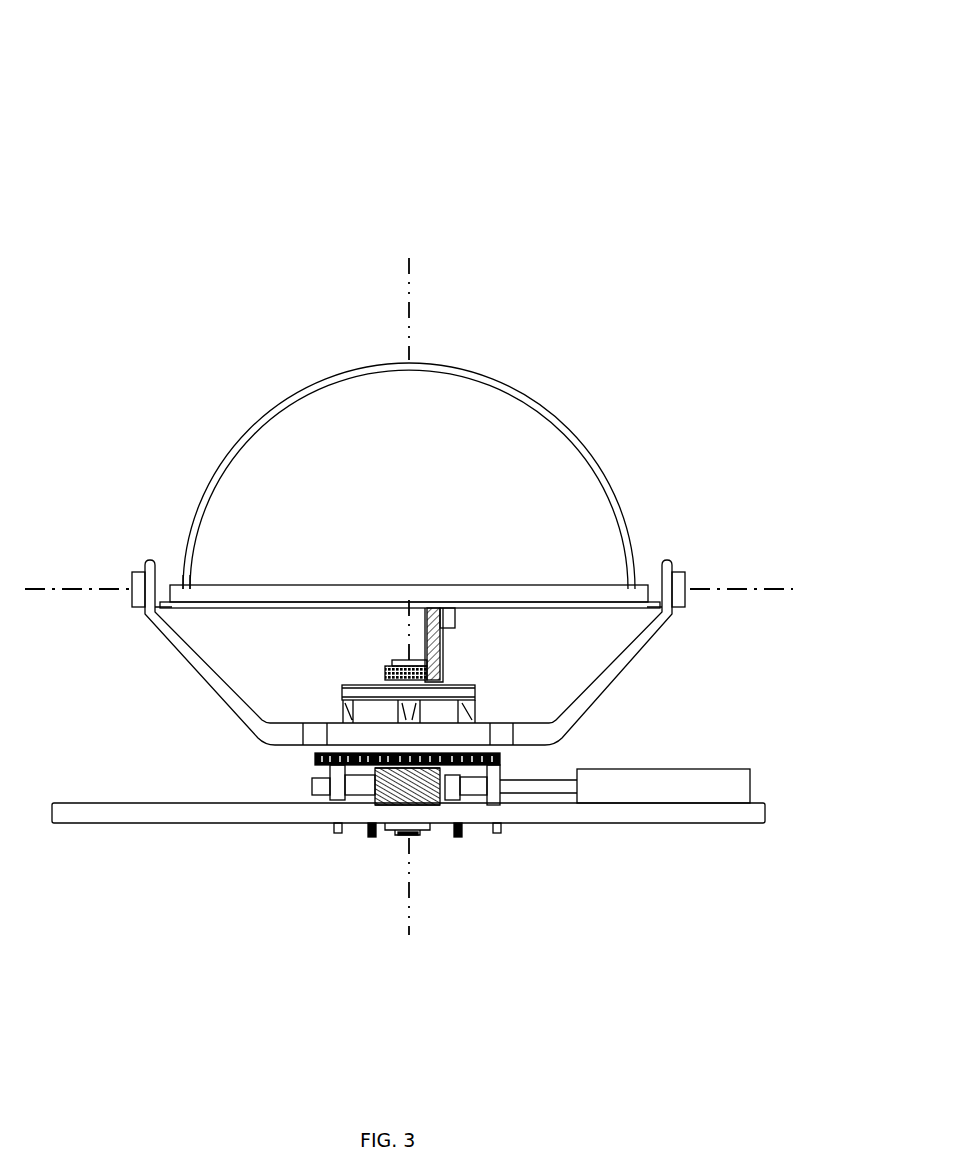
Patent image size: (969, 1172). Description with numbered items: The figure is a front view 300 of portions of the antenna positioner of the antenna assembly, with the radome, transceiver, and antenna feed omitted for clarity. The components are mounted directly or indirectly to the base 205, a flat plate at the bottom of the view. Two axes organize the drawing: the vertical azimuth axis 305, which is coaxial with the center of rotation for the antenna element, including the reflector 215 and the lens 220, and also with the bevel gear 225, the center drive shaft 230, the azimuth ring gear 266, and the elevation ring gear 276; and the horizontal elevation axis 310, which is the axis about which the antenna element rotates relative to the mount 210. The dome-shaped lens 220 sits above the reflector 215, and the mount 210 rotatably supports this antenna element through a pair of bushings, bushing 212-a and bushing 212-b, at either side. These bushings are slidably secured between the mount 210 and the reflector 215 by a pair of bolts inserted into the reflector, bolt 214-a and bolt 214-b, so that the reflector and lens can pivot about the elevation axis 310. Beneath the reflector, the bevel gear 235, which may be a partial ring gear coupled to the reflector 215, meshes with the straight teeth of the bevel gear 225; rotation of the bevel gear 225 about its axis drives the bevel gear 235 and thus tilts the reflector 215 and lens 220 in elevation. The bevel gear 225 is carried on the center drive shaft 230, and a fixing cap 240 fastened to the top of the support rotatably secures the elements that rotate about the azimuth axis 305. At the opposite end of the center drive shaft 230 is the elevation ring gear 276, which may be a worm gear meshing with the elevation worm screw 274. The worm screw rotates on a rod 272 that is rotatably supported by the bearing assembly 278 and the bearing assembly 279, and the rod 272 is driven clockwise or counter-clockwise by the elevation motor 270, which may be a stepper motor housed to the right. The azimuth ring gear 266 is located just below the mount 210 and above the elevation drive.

The front view 300 is at (680, 48).
The azimuth axis 305 is at (411, 310).
The elevation axis 310 is at (728, 592).
The lens 220 is at (612, 490).
The reflector 215 is at (548, 596).
The mount 210 is at (637, 657).
The bushing 212-a is at (130, 570).
The bushing 212-b is at (690, 572).
The bolt 214-a is at (130, 583).
The bolt 214-b is at (690, 583).
The bevel gear 235 is at (448, 655).
The fixing cap 240 is at (392, 662).
The bevel gear 225 is at (380, 672).
The center drive shaft 230 is at (342, 690).
The azimuth ring gear 266 is at (310, 759).
The elevation worm screw 274 is at (436, 810).
The bearing assembly 278 is at (330, 800).
The elevation ring gear 276 is at (352, 806).
The bearing assembly 279 is at (500, 777).
The rod 272 is at (537, 798).
The elevation motor 270 is at (683, 776).
The base 205 is at (98, 814).